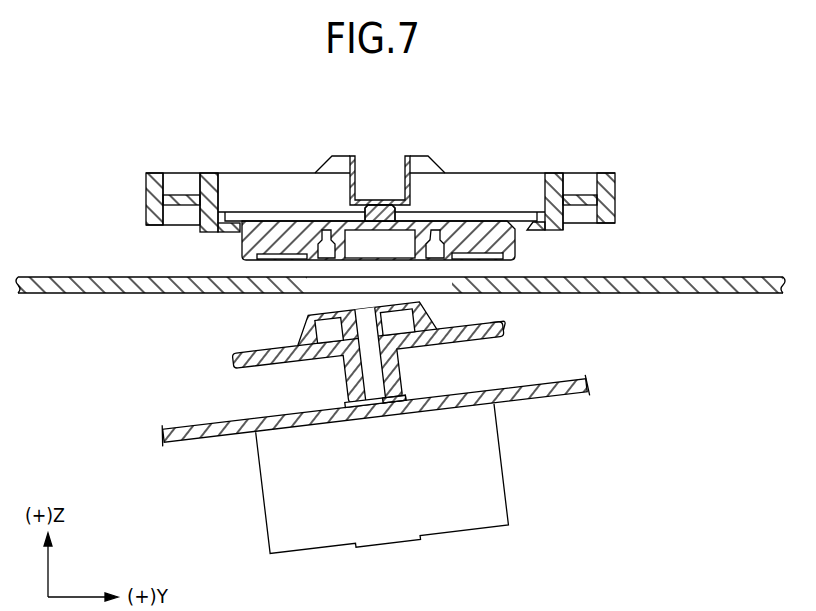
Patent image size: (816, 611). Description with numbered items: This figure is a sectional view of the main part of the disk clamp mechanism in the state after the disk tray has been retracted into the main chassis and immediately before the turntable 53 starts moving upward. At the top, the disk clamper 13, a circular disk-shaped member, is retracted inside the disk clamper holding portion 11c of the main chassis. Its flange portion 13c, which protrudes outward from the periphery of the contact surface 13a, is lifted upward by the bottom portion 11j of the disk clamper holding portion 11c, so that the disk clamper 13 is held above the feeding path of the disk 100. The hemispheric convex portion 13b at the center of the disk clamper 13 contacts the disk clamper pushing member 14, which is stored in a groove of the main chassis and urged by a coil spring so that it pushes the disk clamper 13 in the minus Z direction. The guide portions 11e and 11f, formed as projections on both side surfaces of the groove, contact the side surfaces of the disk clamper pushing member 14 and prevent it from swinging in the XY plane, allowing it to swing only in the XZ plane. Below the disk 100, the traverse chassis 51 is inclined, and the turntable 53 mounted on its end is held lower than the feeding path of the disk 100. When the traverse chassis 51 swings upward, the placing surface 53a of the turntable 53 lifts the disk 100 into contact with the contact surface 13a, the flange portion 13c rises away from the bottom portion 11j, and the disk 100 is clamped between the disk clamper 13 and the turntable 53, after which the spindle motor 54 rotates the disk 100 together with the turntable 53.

The disk clamper holding portion 11c is at (550, 177).
The guide portion 11e is at (424, 156).
The guide portion 11f is at (334, 156).
The bottom portion 11j is at (543, 205).
The disk clamper 13 is at (354, 243).
The contact surface 13a is at (267, 262).
The convex portion 13b is at (392, 198).
The flange portion 13c is at (236, 210).
The disk clamper pushing member 14 is at (381, 204).
The traverse chassis 51 is at (374, 411).
The turntable 53 is at (371, 356).
The placing surface 53a is at (498, 326).
The spindle motor 54 is at (382, 481).
The disk 100 is at (710, 278).